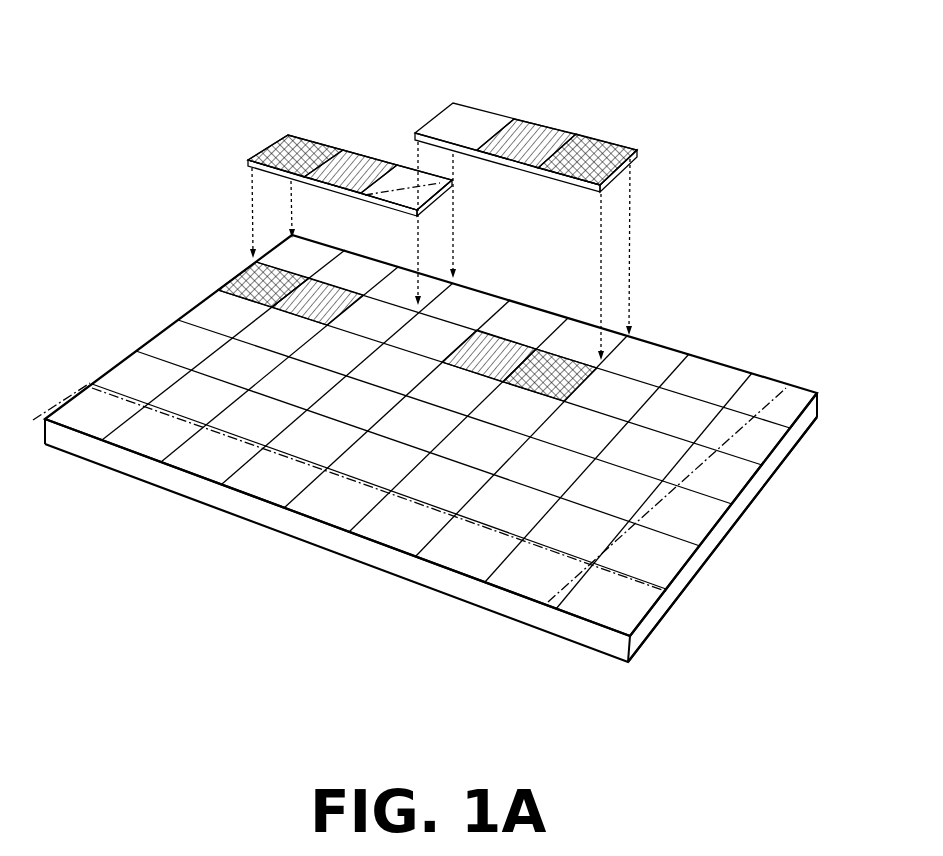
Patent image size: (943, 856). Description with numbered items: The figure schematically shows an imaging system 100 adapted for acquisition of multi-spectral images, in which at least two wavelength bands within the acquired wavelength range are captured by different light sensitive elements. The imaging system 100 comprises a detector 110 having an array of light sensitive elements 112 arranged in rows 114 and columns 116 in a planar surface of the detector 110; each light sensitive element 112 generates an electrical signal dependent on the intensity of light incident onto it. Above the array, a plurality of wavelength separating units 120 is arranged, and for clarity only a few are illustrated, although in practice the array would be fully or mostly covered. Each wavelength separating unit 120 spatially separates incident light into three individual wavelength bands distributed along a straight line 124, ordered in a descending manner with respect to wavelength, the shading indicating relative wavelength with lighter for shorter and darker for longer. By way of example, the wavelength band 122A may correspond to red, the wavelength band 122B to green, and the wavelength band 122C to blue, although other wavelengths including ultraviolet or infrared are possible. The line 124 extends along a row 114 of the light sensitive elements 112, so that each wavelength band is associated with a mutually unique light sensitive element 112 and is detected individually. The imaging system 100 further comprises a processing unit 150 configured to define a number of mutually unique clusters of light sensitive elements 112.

The imaging system 100 is at (745, 87).
The detector 110 is at (532, 648).
The light sensitive element 112 is at (97, 420).
The row 114 is at (372, 547).
The column 116 is at (714, 540).
The wavelength separating unit 120 is at (438, 181).
The wavelength band 122A is at (310, 135).
The wavelength band 122B is at (363, 147).
The wavelength band 122C is at (430, 183).
The straight line 124 is at (282, 133).
The processing unit 150 is at (205, 512).